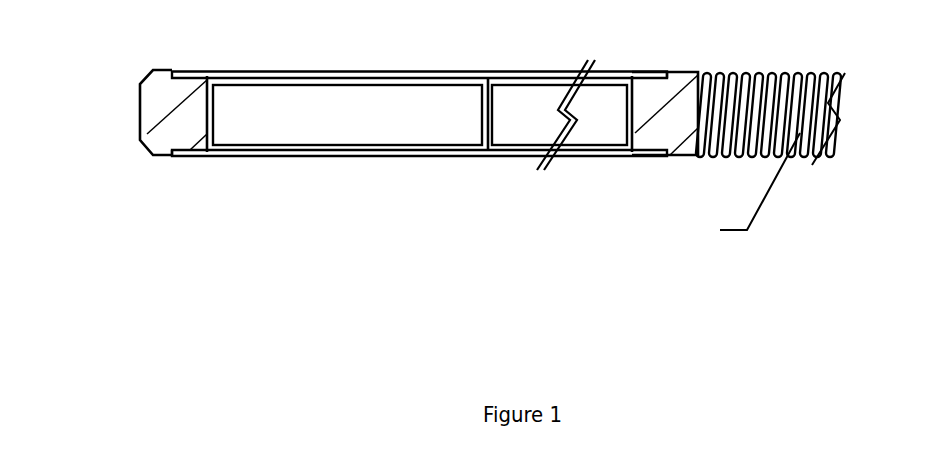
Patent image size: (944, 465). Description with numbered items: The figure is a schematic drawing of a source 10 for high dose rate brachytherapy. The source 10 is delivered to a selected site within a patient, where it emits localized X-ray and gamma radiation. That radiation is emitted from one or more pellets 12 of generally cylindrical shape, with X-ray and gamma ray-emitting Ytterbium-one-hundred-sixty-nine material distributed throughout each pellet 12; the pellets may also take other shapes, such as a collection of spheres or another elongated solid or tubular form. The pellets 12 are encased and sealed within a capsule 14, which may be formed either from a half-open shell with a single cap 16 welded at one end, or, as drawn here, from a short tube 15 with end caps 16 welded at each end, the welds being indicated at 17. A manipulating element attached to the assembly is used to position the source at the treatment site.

The source 10 is at (200, 48).
The pellet 12 is at (377, 147).
The capsule 14 is at (382, 72).
The short tube 15 is at (518, 158).
The end cap 16 is at (138, 125).
The weld 17 is at (173, 155).